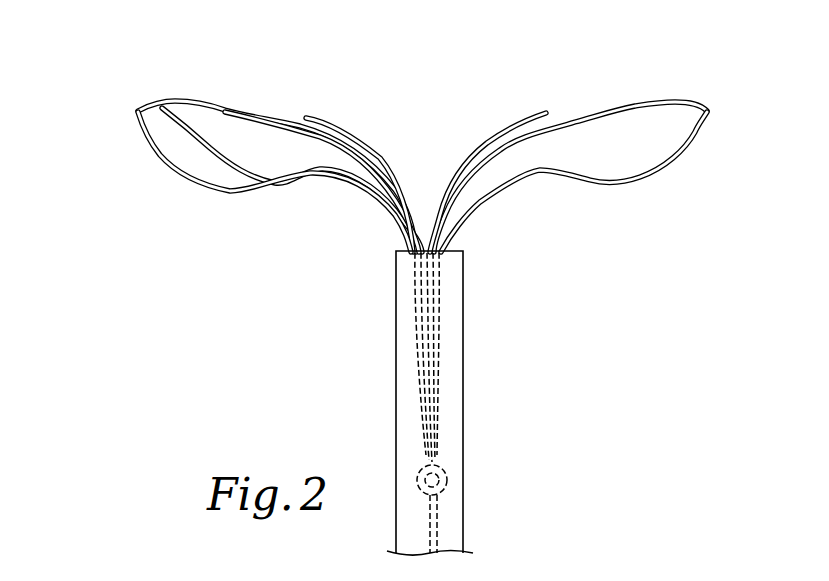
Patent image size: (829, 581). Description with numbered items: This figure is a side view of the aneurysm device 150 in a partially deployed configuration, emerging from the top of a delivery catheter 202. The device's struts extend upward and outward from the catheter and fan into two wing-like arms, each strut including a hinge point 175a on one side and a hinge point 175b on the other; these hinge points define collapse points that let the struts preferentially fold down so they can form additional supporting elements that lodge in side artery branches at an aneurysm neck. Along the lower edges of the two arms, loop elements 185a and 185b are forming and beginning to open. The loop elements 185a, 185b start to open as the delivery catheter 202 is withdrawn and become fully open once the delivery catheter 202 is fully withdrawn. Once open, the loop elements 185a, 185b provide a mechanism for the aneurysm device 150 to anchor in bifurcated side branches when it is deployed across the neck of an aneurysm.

The aneurysm device 150 is at (414, 287).
The hinge point 175a is at (137, 111).
The hinge point 175b is at (708, 111).
The loop element 185a is at (220, 192).
The loop element 185b is at (608, 183).
The delivery catheter 202 is at (463, 383).